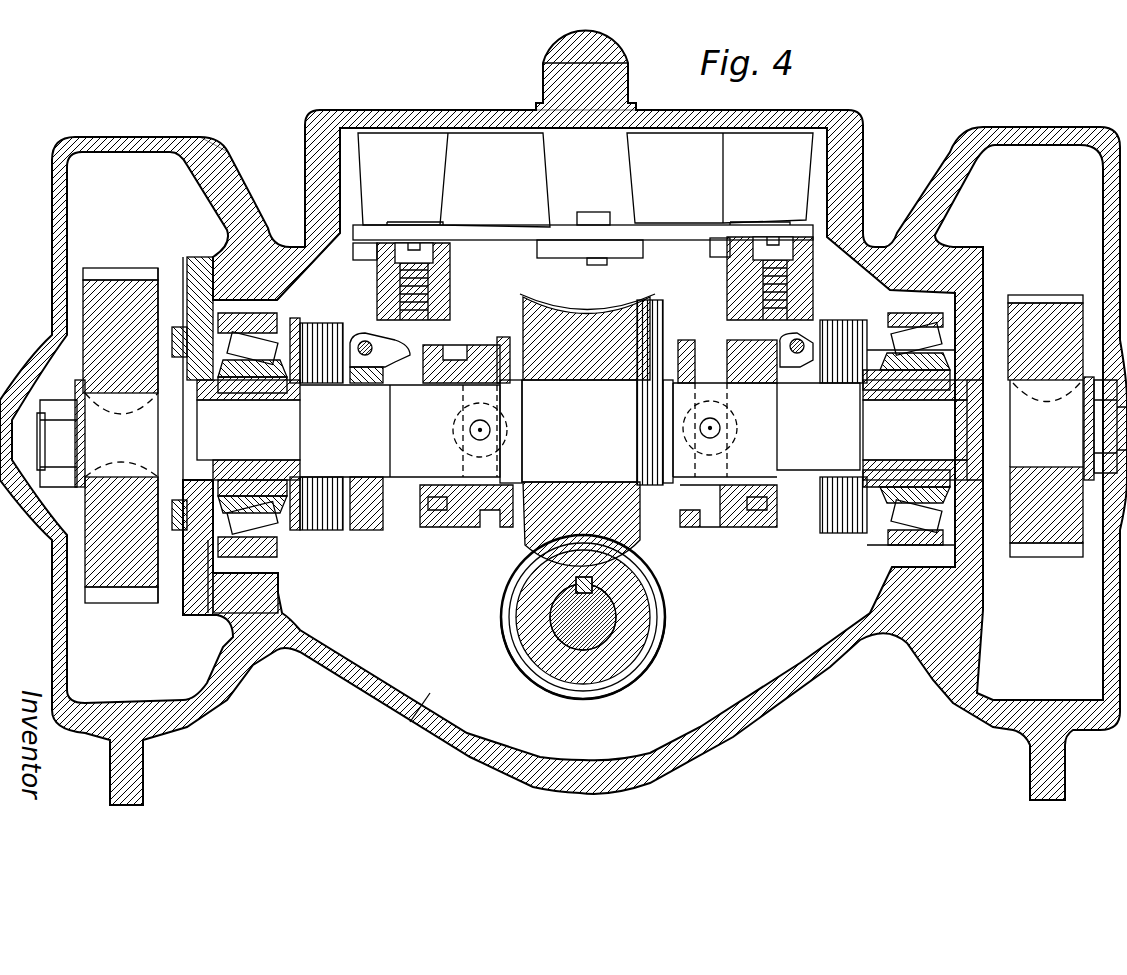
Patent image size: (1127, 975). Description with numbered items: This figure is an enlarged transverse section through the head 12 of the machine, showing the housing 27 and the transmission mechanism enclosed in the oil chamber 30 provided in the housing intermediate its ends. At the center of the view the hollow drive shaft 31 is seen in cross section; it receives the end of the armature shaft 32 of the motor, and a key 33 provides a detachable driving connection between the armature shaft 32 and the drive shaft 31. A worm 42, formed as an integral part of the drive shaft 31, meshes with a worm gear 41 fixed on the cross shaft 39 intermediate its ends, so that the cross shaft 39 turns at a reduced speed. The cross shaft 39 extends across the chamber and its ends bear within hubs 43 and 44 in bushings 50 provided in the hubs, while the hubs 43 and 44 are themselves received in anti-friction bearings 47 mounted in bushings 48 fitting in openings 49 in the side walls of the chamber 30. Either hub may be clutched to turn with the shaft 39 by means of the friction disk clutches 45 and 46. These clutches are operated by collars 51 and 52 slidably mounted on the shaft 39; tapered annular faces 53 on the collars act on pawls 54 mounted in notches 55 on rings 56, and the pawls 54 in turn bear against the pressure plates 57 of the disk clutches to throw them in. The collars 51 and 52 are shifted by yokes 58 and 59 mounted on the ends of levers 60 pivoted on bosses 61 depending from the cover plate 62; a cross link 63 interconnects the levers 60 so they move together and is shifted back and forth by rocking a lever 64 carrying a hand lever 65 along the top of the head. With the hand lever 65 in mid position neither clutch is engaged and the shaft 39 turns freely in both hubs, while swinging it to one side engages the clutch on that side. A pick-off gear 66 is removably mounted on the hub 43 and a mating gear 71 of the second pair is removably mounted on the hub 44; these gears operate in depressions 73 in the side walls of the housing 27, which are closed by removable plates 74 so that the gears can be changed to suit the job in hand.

The head 12 is at (866, 168).
The housing 27 is at (312, 200).
The oil chamber 30 is at (409, 721).
The drive shaft 31 is at (623, 670).
The armature shaft 32 is at (613, 628).
The key 33 is at (593, 582).
The cross shaft 39 is at (580, 392).
The worm gear 41 is at (572, 318).
The worm 42 is at (502, 620).
The hub 43 is at (237, 463).
The hub 44 is at (930, 470).
The friction disk clutch 45 is at (335, 530).
The friction disk clutch 46 is at (833, 530).
The anti-friction bearing 47 is at (257, 547).
The bushing 48 is at (200, 620).
The opening 49 is at (262, 585).
The bushing 50 is at (287, 333).
The clutch collar 51 is at (475, 358).
The clutch collar 52 is at (700, 338).
The tapered annular face 53 is at (443, 527).
The pawl 54 is at (393, 387).
The notch 55 is at (358, 332).
The ring 56 is at (377, 527).
The pressure plate 57 is at (358, 530).
The yoke 58 is at (457, 297).
The yoke 59 is at (733, 287).
The lever 60 is at (372, 260).
The boss 61 is at (430, 182).
The cover plate 62 is at (688, 118).
The cross link 63 is at (490, 226).
The lever 64 is at (627, 250).
The hand lever 65 is at (616, 56).
The pick-off gear 66 is at (113, 278).
The gear 71 is at (1040, 295).
The depression 73 is at (180, 168).
The removable plate 74 is at (52, 203).